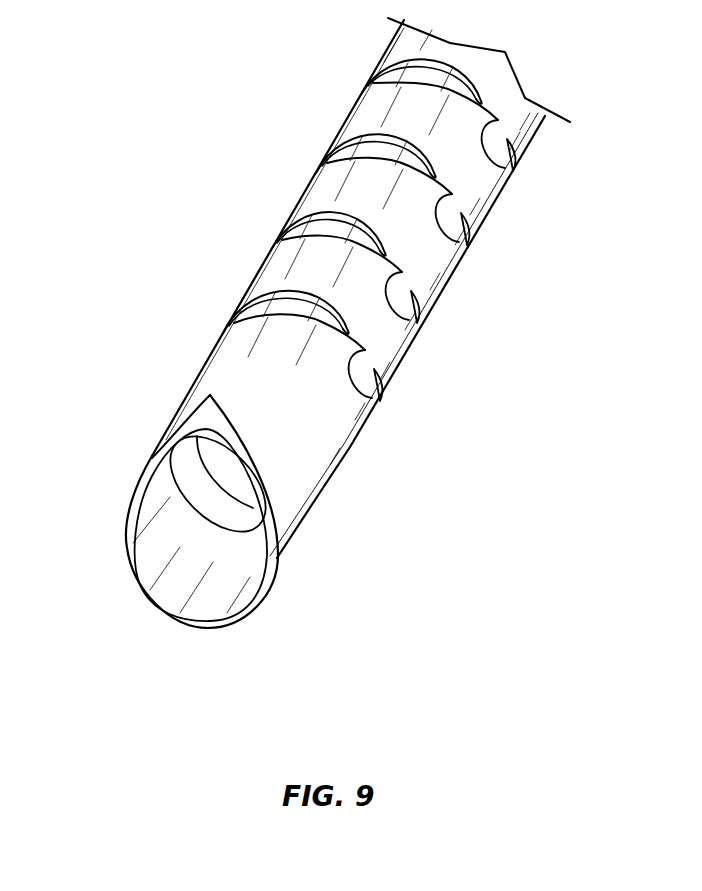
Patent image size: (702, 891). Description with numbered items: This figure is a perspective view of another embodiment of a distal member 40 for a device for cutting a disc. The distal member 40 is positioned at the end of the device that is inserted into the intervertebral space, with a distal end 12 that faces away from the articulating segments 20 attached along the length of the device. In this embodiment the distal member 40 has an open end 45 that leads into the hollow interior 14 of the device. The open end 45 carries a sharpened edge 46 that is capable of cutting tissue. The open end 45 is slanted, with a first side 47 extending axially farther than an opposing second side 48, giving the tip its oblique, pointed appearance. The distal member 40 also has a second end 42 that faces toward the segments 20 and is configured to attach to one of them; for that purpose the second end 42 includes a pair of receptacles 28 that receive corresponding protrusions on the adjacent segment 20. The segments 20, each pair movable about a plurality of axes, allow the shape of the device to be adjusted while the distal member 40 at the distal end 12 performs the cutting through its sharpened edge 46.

The distal end 12 is at (187, 618).
The hollow interior space 14 is at (213, 462).
The articulating segments 20 is at (420, 262).
The receptacles 28 is at (303, 318).
The distal member 40 is at (342, 415).
The second end 42 is at (273, 315).
The open end 45 is at (222, 592).
The sharpened edge 46 is at (130, 580).
The first side 47 is at (158, 612).
The second side 48 is at (190, 425).